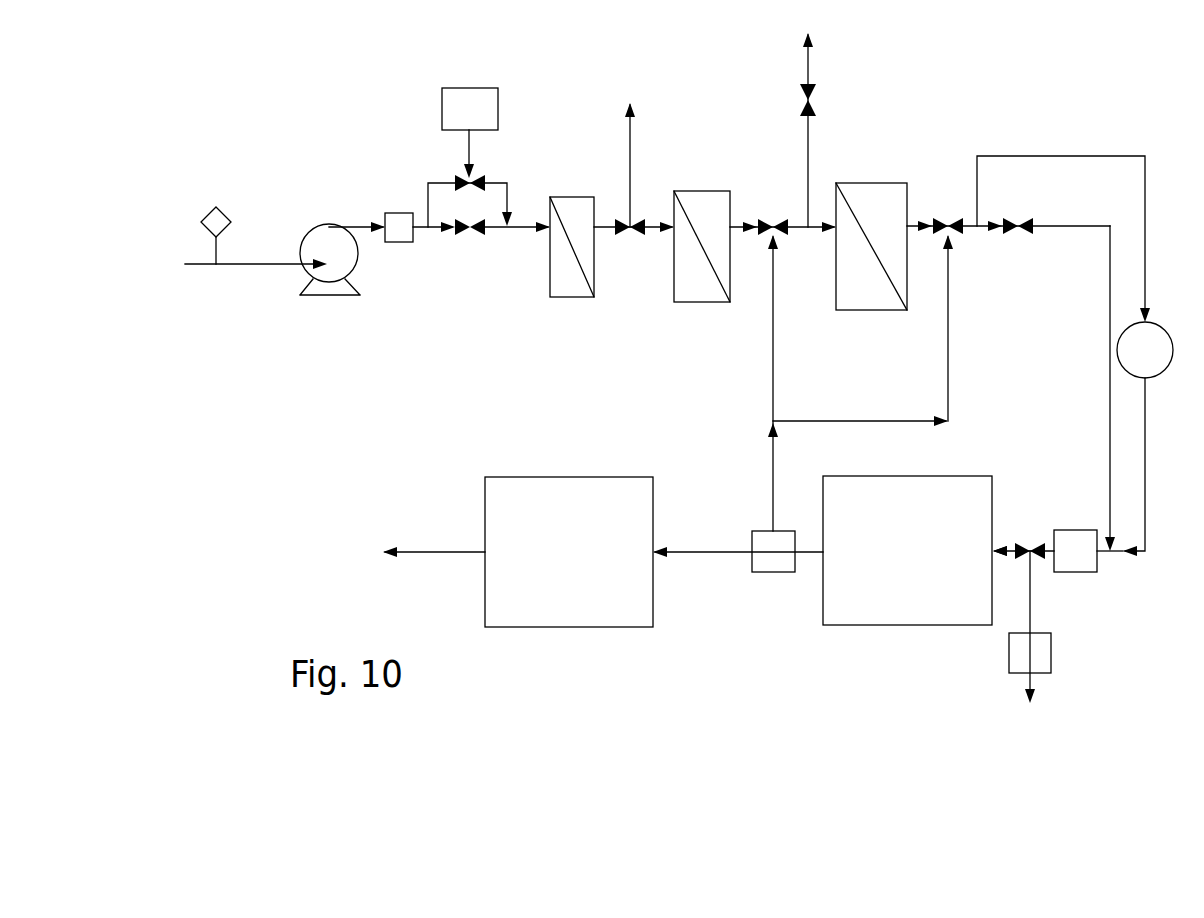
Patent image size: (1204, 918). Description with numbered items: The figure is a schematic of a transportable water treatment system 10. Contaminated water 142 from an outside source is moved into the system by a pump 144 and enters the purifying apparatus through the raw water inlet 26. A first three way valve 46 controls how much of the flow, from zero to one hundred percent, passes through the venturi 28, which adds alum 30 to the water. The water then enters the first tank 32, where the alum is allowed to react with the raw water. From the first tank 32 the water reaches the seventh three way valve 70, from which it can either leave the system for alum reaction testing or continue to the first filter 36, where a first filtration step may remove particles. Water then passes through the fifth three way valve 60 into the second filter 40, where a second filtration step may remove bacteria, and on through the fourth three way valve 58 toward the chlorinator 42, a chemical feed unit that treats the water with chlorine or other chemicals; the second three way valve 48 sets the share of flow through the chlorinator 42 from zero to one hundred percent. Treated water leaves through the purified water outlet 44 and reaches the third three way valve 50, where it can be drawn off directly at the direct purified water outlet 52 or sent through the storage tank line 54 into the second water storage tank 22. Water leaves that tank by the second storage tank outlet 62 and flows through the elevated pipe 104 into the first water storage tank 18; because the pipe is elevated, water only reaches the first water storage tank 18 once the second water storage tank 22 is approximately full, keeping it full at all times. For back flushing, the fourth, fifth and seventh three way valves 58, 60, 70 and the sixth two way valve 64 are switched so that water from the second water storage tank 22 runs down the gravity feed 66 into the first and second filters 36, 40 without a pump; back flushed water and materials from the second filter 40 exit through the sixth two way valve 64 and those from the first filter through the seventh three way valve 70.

The transportable water treatment system 10 is at (580, 55).
The first water storage tank 18 is at (513, 627).
The second water storage tank 22 is at (865, 627).
The raw water inlet 26 is at (397, 243).
The venturi 28 is at (455, 181).
The alum 30 is at (442, 97).
The first tank 32 is at (570, 297).
The first filter 36 is at (702, 302).
The second filter 40 is at (870, 310).
The chlorinator 42 is at (1166, 336).
The purified water outlet 44 is at (1073, 572).
The first three way valve 46 is at (463, 238).
The second three way valve 48 is at (1015, 240).
The third three way valve 50 is at (1030, 545).
The direct purified water outlet 52 is at (1051, 655).
The storage tank line 54 is at (1003, 545).
The fourth three way valve 58 is at (946, 220).
The fifth three way valve 60 is at (773, 222).
The second storage tank outlet 62 is at (770, 572).
The sixth two way valve 64 is at (812, 100).
The gravity feed 66 is at (773, 478).
The seventh three way valve 70 is at (630, 230).
The elevated pipe 104 is at (703, 552).
The contaminated water 142 is at (208, 213).
The pump 144 is at (318, 226).